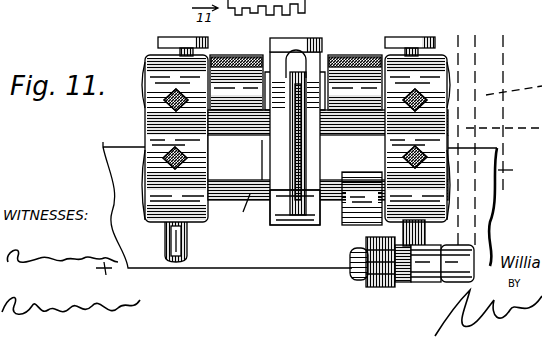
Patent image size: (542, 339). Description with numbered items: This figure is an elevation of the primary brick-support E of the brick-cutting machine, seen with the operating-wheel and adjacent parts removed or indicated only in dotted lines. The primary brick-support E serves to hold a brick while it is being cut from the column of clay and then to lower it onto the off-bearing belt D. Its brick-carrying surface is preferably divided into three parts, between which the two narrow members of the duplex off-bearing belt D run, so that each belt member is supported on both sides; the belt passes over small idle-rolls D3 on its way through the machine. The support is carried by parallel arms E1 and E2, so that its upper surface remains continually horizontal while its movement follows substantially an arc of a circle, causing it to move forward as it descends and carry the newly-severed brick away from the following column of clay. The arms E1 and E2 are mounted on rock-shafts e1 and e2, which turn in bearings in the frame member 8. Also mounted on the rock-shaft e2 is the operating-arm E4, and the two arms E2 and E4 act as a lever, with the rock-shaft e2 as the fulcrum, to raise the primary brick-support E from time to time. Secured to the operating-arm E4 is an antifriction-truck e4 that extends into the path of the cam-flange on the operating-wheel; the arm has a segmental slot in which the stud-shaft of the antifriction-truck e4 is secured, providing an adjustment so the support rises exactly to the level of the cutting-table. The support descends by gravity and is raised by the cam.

The off-bearing belt D is at (232, 62).
The small idle-rolls D3 is at (405, 80).
The primary brick-support E is at (312, 37).
The parallel arm E1 is at (287, 90).
The parallel arm E2 is at (316, 168).
The operating-arm E4 is at (368, 233).
The rock-shaft e1 is at (328, 155).
The rock-shaft e2 is at (243, 214).
The antifriction-truck e4 is at (445, 279).
The frame member 8 is at (512, 178).